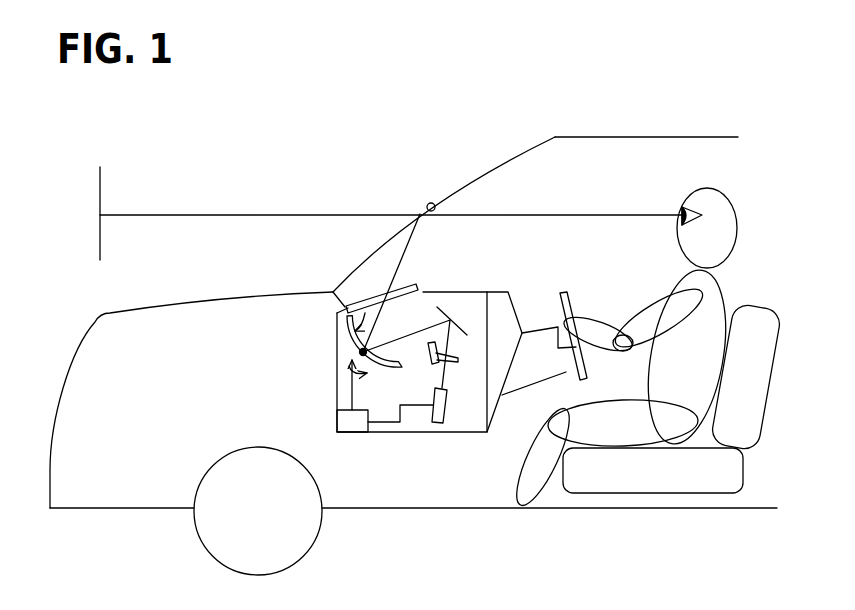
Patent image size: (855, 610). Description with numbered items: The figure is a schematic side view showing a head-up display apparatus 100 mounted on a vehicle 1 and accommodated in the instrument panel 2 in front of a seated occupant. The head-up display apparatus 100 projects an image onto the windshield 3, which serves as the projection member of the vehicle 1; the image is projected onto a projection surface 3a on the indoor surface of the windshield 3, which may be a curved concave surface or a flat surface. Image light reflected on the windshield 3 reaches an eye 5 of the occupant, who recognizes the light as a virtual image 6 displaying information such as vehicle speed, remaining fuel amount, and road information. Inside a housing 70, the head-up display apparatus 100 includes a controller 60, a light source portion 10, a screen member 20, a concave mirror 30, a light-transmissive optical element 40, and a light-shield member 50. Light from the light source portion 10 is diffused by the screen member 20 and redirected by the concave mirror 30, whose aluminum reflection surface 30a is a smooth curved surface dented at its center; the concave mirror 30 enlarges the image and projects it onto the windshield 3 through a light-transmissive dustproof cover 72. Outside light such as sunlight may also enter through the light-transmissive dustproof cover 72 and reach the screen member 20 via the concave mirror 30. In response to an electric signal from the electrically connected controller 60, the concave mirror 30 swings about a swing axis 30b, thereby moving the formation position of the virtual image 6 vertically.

The vehicle 1 is at (712, 136).
The instrument panel 2 is at (506, 291).
The windshield 3 is at (480, 176).
The projection surface 3a is at (428, 206).
The eye 5 is at (680, 210).
The virtual image 6 is at (102, 177).
The light source portion 10 is at (444, 412).
The screen member 20 is at (457, 322).
The concave mirror 30 is at (347, 323).
The reflection surface 30a is at (347, 310).
The swing axis 30b is at (345, 366).
The light-transmissive optical element 40 is at (452, 360).
The light-shield member 50 is at (429, 340).
The controller 60 is at (352, 433).
The housing 70 is at (400, 433).
The light-transmissive dustproof cover 72 is at (368, 296).
The head-up display apparatus 100 is at (300, 368).